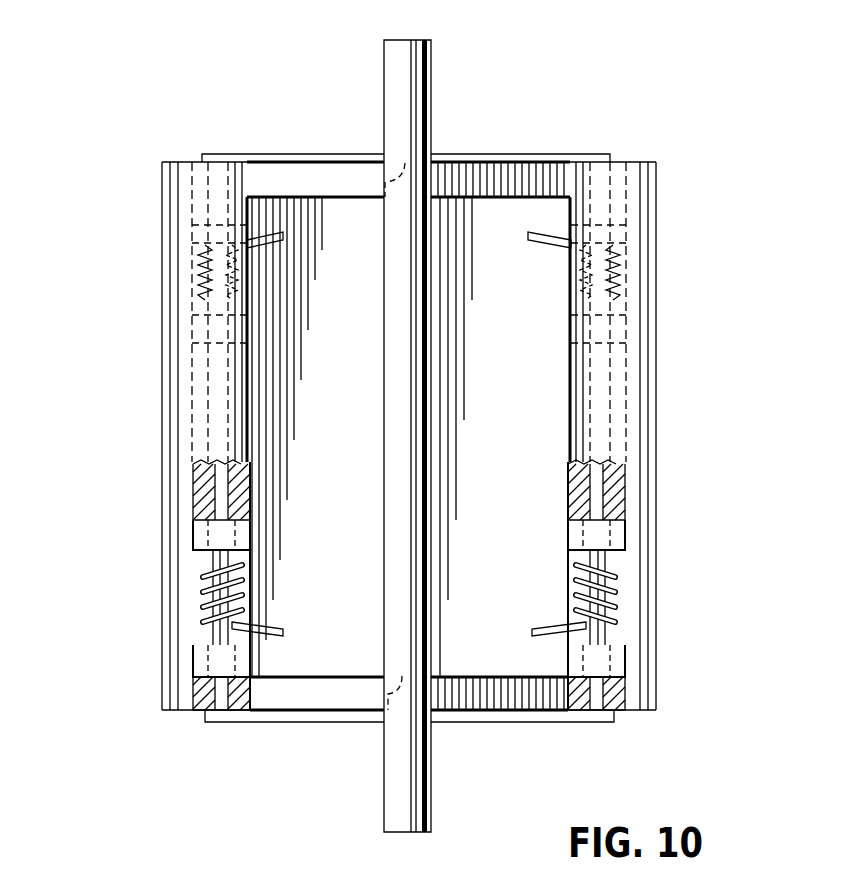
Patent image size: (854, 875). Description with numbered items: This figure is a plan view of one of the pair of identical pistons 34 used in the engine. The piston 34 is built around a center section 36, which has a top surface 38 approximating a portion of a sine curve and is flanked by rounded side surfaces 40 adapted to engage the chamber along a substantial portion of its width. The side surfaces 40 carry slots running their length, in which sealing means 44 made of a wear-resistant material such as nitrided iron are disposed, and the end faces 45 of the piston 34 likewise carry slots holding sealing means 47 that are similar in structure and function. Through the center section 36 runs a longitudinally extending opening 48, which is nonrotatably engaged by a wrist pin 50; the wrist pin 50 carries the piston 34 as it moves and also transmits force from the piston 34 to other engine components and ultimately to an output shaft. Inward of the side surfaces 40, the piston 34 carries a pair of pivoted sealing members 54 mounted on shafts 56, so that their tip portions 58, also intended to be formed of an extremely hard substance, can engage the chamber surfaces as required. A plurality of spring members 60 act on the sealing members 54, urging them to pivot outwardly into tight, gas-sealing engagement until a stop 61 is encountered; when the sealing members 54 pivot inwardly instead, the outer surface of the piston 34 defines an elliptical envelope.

The piston 34 is at (283, 153).
The center section 36 is at (508, 217).
The top surface 38 is at (497, 462).
The side surfaces 40 is at (169, 184).
The sealing means 44 is at (163, 216).
The end faces 45 is at (483, 180).
The sealing means 47 is at (360, 155).
The longitudinally extending opening 48 is at (407, 160).
The wrist pin 50 is at (392, 82).
The pivoted sealing members 54 is at (186, 356).
The shafts 56 is at (215, 493).
The tip portions 58 is at (248, 390).
The spring members 60 is at (200, 260).
The stop 61 is at (183, 540).